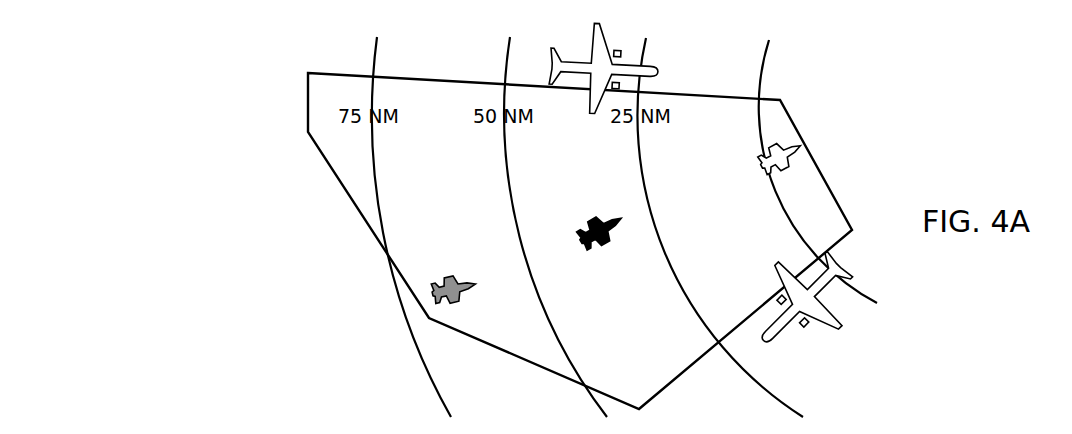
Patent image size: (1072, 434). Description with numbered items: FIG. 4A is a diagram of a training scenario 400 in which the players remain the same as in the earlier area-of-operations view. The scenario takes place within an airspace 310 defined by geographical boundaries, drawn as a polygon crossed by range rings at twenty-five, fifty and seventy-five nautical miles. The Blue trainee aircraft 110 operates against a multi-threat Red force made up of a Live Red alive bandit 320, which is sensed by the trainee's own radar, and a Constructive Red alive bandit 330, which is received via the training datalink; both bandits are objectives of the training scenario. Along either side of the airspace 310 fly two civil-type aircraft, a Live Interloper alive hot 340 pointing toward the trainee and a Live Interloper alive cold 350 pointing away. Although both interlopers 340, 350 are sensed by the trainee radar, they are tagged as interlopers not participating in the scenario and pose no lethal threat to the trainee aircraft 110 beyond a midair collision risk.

The display view of range rings 400 is at (52, 126).
The airspace 310 is at (337, 177).
The Live Interloper alive hot 340 is at (660, 74).
The Live Interloper alive cold 350 is at (802, 327).
The Blue trainee aircraft 110 is at (780, 142).
The Live Red alive bandit 320 is at (601, 215).
The Constructive Red alive bandit 330 is at (470, 280).